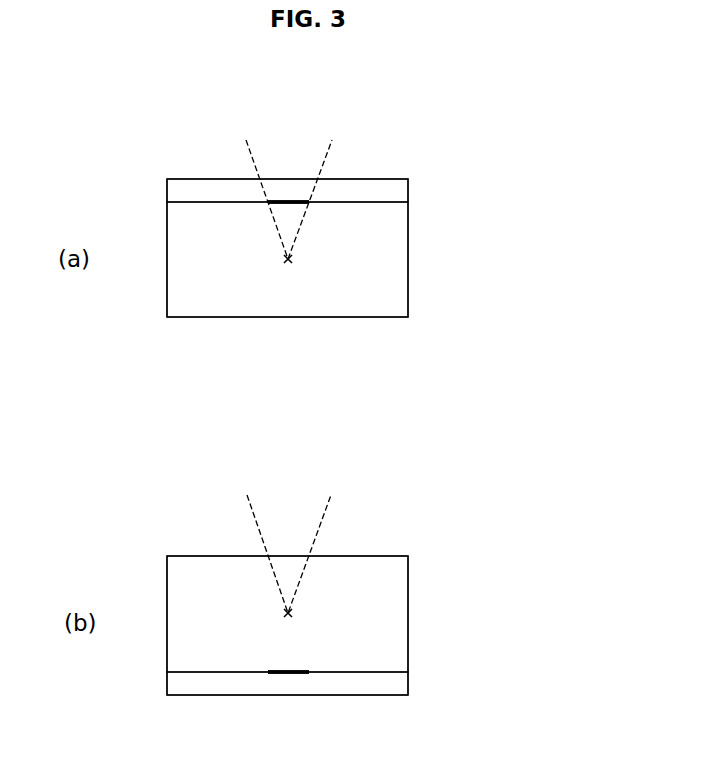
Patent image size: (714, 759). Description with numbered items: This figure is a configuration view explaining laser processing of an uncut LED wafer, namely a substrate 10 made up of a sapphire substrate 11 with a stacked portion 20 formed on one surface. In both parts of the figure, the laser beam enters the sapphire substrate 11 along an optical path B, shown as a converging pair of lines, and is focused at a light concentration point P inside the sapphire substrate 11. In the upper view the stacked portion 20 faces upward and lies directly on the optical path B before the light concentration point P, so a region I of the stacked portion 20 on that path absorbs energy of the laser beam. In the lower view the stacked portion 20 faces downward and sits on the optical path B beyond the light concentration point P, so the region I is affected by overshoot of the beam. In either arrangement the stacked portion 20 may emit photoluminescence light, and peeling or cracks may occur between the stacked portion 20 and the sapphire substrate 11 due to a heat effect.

The substrate 10 is at (500, 219).
The sapphire substrate 11 is at (395, 269).
The stacked portion 20 is at (395, 194).
The optical path B is at (325, 160).
The region I is at (287, 200).
The light concentration point P is at (289, 268).